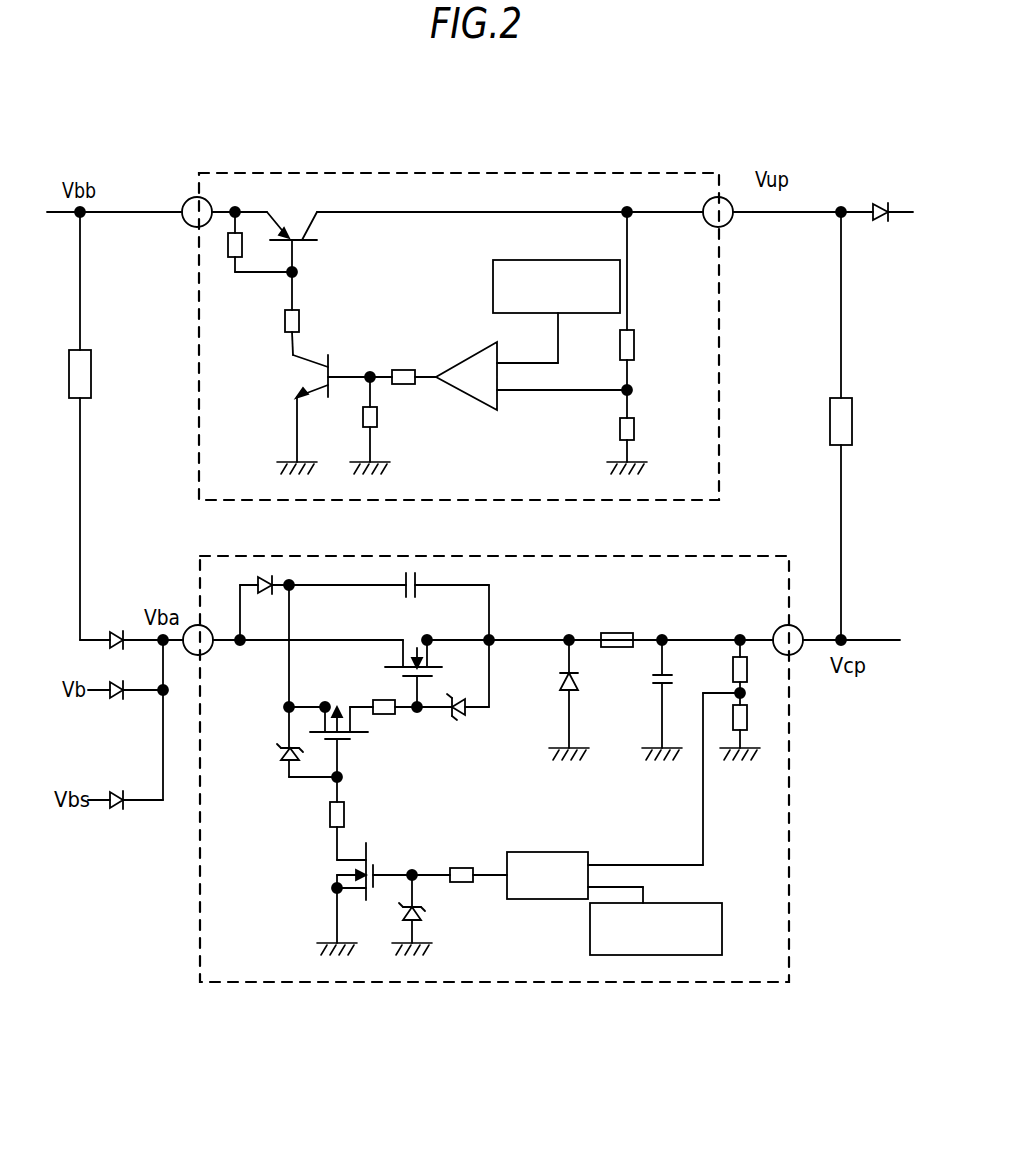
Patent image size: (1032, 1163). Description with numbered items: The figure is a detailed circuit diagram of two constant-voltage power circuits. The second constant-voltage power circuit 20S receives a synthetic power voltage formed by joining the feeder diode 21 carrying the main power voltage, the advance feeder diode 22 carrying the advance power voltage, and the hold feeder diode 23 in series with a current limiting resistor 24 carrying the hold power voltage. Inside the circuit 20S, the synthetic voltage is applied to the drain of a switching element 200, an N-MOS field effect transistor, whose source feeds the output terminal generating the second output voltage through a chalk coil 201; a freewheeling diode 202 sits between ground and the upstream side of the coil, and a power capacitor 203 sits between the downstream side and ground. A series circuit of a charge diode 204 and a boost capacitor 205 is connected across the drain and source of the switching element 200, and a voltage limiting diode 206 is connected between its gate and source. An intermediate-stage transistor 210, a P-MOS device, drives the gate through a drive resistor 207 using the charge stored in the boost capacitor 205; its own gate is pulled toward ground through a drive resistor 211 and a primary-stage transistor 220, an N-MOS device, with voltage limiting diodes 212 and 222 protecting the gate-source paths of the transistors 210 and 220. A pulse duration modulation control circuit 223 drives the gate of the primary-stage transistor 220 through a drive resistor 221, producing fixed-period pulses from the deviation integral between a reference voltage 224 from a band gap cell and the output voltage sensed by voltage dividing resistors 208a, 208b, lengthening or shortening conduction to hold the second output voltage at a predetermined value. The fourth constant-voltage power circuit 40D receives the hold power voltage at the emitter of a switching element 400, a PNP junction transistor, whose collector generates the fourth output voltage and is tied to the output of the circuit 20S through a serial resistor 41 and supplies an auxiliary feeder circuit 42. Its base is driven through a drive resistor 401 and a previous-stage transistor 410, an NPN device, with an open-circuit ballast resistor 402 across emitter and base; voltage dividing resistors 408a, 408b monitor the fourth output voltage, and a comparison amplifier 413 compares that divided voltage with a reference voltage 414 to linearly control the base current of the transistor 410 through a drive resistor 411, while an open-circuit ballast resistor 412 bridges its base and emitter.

The current limiting resistor 24 is at (91, 372).
The hold feeder diode 23 is at (122, 630).
The feeder diode 21 is at (113, 697).
The advance feeder diode 22 is at (113, 806).
The serial resistor 41 is at (830, 420).
The auxiliary feeder circuit 42 is at (878, 206).
The fourth constant-voltage power circuit 40D is at (610, 147).
The second constant-voltage power circuit 20S is at (695, 529).
The switching element 400 is at (316, 243).
The drive resistor 401 is at (300, 322).
The open-circuit ballast resistor 402 is at (233, 258).
The previous-stage transistor 410 is at (286, 393).
The drive resistor 411 is at (400, 370).
The open-circuit ballast resistor 412 is at (378, 417).
The comparison amplifier 413 is at (483, 403).
The reference voltage 414 is at (493, 288).
The voltage dividing resistor 408a is at (634, 345).
The voltage dividing resistor 408b is at (634, 428).
The switching element 200 is at (415, 640).
The chalk coil 201 is at (617, 631).
The freewheeling diode 202 is at (561, 681).
The power capacitor 203 is at (651, 680).
The charge diode 204 is at (261, 578).
The boost capacitor 205 is at (405, 572).
The voltage limiting diode 206 is at (463, 720).
The drive resistor 207 is at (370, 699).
The voltage dividing resistor 208a is at (733, 675).
The voltage dividing resistor 208b is at (747, 718).
The intermediate-stage transistor 210 is at (362, 737).
The drive resistor 211 is at (330, 812).
The voltage limiting diode 212 is at (282, 755).
The primary-stage transistor 220 is at (335, 875).
The drive resistor 221 is at (459, 868).
The voltage limiting diode 222 is at (426, 911).
The pulse duration modulation control circuit 223 is at (541, 852).
The reference voltage 224 is at (724, 931).